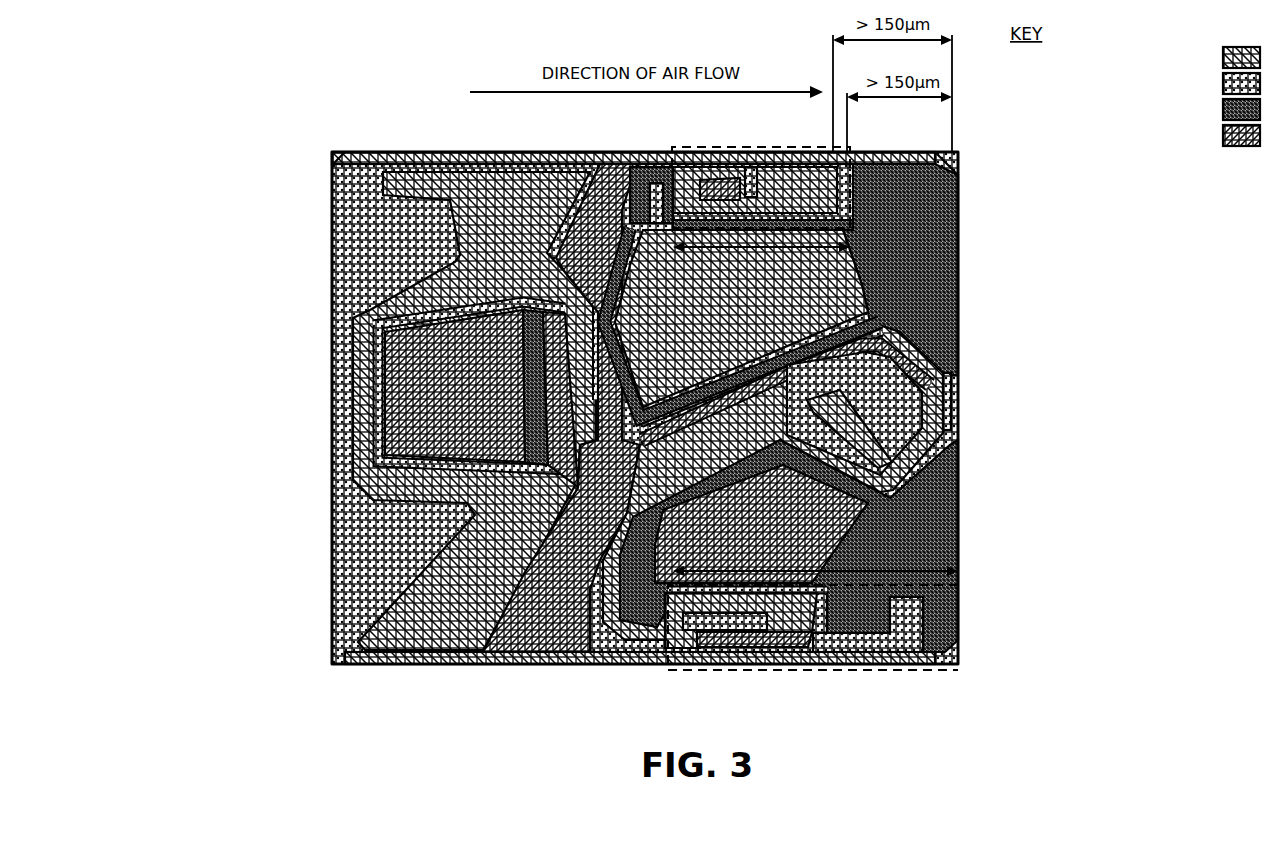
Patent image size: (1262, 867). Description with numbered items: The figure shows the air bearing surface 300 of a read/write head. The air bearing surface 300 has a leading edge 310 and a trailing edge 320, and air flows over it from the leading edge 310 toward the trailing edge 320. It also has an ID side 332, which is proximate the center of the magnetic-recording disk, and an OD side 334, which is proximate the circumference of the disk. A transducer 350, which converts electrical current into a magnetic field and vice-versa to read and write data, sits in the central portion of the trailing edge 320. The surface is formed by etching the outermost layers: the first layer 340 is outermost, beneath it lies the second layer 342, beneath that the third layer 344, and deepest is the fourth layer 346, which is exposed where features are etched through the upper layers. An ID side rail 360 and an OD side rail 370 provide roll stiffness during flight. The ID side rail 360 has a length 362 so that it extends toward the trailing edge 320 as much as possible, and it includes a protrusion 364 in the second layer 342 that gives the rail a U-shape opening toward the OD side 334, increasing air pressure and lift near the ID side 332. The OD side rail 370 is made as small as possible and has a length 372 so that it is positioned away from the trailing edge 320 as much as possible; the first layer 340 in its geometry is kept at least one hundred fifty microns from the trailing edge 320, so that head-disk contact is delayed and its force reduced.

The air bearing surface 300 is at (466, 709).
The leading edge 310 is at (306, 390).
The trailing edge 320 is at (975, 299).
The ID side 332 is at (520, 665).
The OD side 334 is at (421, 152).
The first layer 340 is at (937, 227).
The second layer 342 is at (796, 251).
The third layer 344 is at (940, 375).
The fourth layer 346 is at (957, 354).
The transducer 350 is at (950, 436).
The ID side rail 360 is at (812, 673).
The length 362 is at (950, 548).
The protrusion 364 is at (903, 625).
The OD side rail 370 is at (762, 148).
The length 372 is at (848, 263).